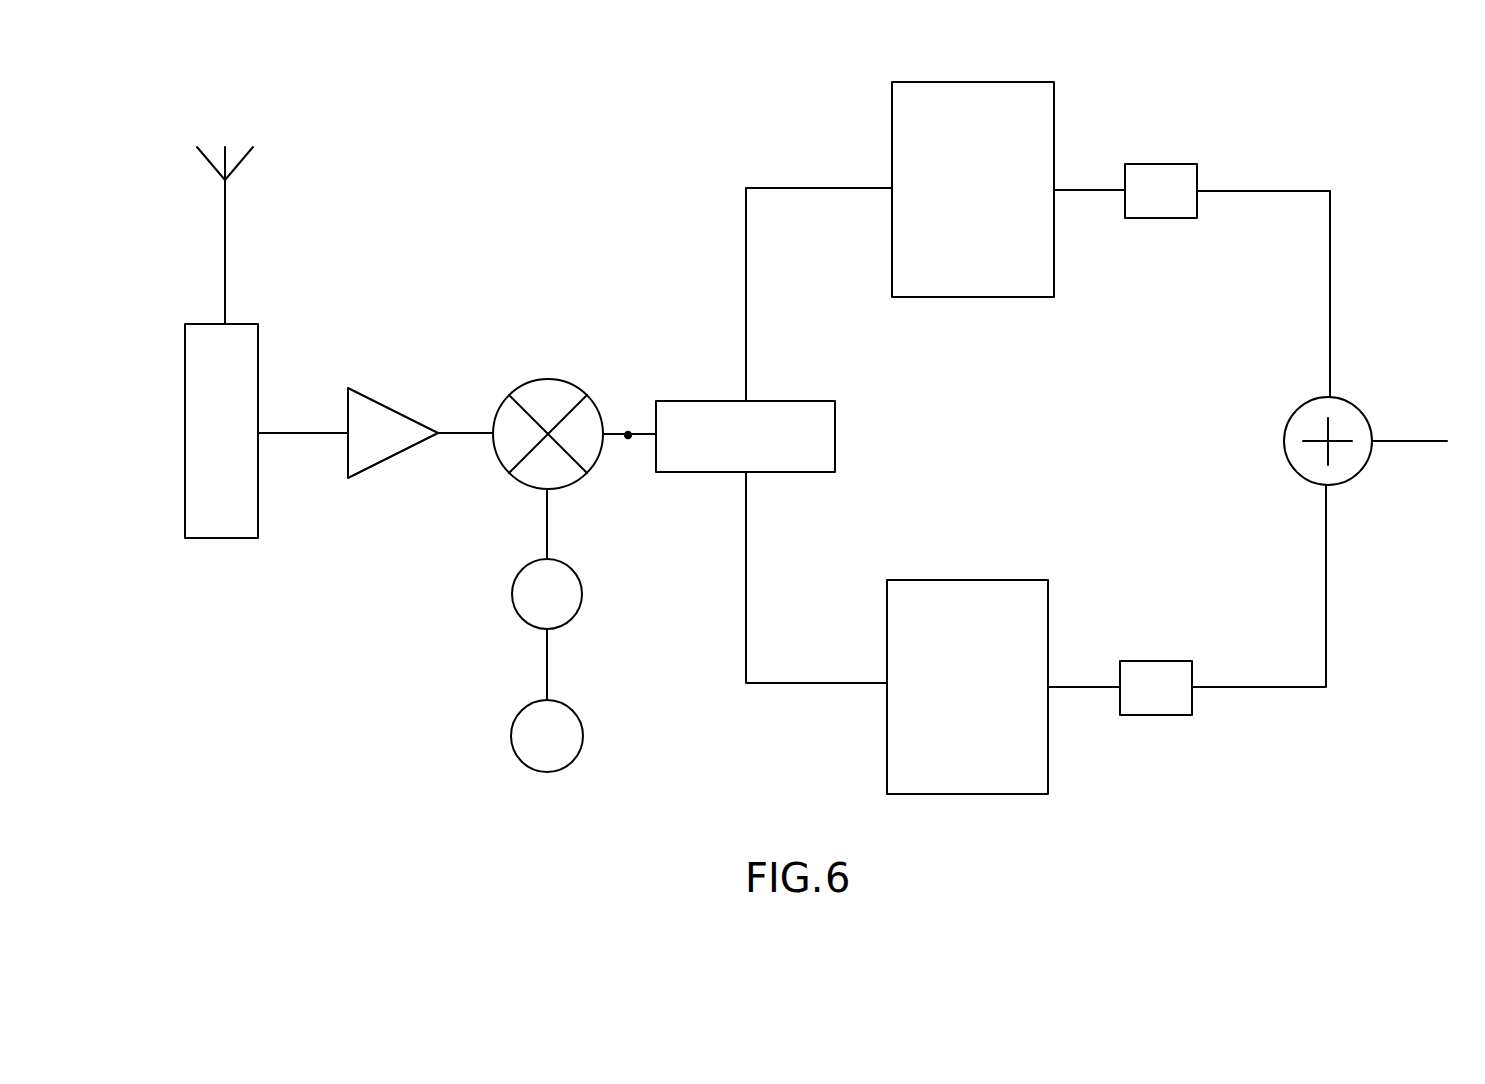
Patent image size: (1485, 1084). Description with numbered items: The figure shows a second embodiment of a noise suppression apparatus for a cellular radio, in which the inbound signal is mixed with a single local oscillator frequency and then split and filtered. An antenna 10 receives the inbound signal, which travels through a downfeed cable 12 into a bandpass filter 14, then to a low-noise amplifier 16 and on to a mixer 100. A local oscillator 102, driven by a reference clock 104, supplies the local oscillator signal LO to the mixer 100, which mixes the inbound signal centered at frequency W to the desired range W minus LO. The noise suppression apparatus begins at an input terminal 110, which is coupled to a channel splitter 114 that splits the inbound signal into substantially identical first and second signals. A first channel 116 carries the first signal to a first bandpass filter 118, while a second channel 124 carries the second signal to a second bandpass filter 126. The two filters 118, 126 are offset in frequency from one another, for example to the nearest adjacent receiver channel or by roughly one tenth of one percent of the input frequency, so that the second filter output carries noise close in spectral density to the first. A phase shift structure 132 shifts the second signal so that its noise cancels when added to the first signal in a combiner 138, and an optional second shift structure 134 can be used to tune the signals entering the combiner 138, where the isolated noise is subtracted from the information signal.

The antenna 10 is at (228, 158).
The downfeed cable 12 is at (225, 213).
The bandpass filter 14 is at (258, 336).
The low-noise amplifier 16 is at (392, 404).
The mixer 100 is at (565, 380).
The local oscillator 102 is at (512, 581).
The reference clock 104 is at (511, 722).
The input terminal 110 is at (628, 430).
The channel splitter 114 is at (835, 410).
The first channel 116 is at (813, 188).
The first bandpass filter 118 is at (1033, 82).
The second channel 124 is at (746, 565).
The second bandpass filter 126 is at (1030, 580).
The phase shift structure 132 is at (1175, 661).
The second shift structure 134 is at (1180, 164).
The combiner 138 is at (1362, 408).